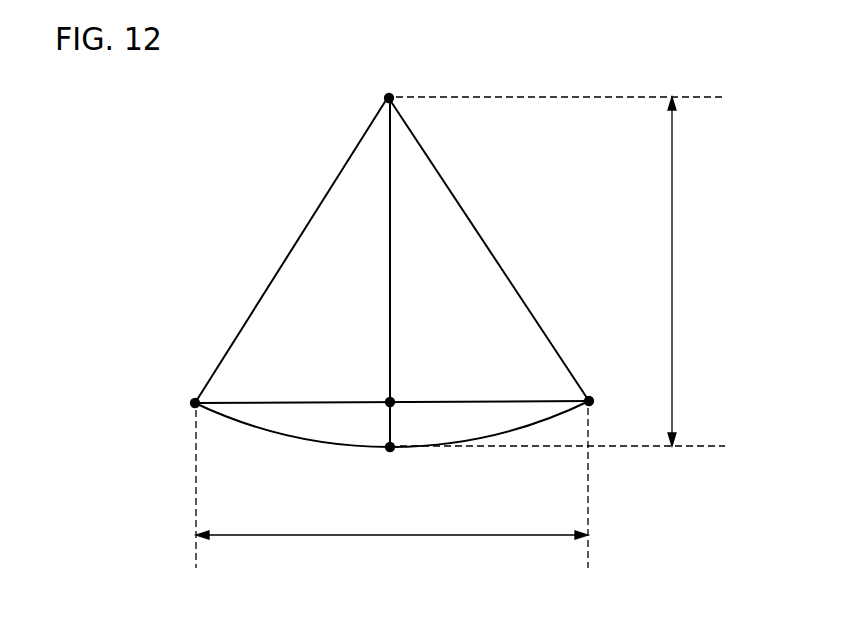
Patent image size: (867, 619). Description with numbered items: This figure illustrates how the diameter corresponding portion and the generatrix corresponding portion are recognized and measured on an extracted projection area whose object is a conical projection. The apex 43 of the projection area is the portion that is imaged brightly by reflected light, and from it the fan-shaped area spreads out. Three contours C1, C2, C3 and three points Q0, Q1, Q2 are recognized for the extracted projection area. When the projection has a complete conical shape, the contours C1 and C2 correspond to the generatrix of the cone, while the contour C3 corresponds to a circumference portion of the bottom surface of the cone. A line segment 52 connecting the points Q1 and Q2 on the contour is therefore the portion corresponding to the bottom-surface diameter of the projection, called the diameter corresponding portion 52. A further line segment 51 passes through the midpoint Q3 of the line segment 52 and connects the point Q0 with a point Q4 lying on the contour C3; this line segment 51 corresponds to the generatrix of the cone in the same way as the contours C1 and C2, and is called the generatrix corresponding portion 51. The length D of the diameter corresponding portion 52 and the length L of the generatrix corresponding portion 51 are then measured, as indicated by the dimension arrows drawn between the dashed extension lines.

The apex of the projection area 43 is at (392, 293).
The generatrix corresponding portion 51 is at (390, 230).
The diameter corresponding portion 52 is at (490, 398).
The contour C1 is at (263, 292).
The contour C2 is at (497, 257).
The contour C3 is at (297, 437).
The point Q0 is at (391, 82).
The point Q1 is at (171, 405).
The point Q2 is at (610, 393).
The midpoint Q3 is at (411, 390).
The point Q4 is at (391, 464).
The length of the generatrix corresponding portion L is at (560, 271).
The length of the diameter corresponding portion D is at (392, 488).